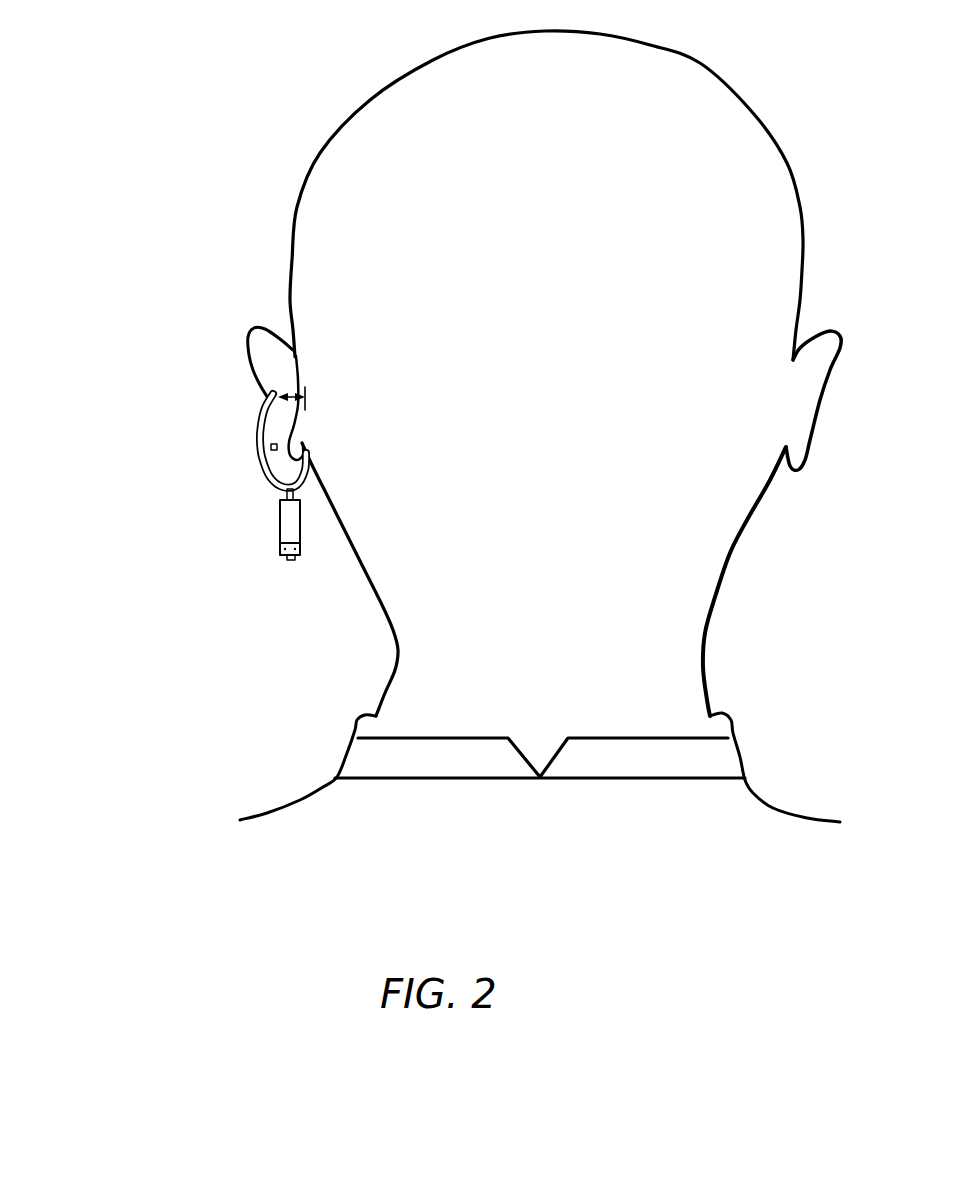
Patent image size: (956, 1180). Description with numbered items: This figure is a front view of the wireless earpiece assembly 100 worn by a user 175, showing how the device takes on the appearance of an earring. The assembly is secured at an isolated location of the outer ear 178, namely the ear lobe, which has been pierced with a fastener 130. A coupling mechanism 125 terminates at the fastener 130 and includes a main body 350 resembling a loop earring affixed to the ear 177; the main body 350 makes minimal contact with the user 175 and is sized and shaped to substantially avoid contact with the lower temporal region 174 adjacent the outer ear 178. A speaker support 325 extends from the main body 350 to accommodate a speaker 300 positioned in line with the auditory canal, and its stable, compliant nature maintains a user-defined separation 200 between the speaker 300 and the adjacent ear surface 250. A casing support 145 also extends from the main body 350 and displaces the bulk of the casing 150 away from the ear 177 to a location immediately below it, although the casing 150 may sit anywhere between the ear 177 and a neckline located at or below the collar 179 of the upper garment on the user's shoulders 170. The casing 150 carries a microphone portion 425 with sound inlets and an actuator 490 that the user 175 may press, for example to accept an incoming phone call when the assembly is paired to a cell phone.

The wireless earpiece assembly 100 is at (148, 446).
The coupling mechanism 125 is at (240, 472).
The fastener 130 is at (306, 446).
The casing support 145 is at (280, 493).
The casing 150 is at (312, 531).
The shoulders / body of wearer 170 is at (745, 810).
The lower temporal region 174 is at (330, 505).
The user 175 is at (556, 84).
The ear 177 is at (263, 363).
The outer ear 178 is at (302, 463).
The collar 179 is at (355, 757).
The user-defined separation 200 is at (293, 402).
The adjacent ear surface 250 is at (310, 406).
The speaker 300 is at (267, 397).
The speaker support 325 is at (262, 430).
The main body 350 is at (302, 482).
The microphone portion 425 is at (278, 547).
The actuator 490 is at (285, 560).